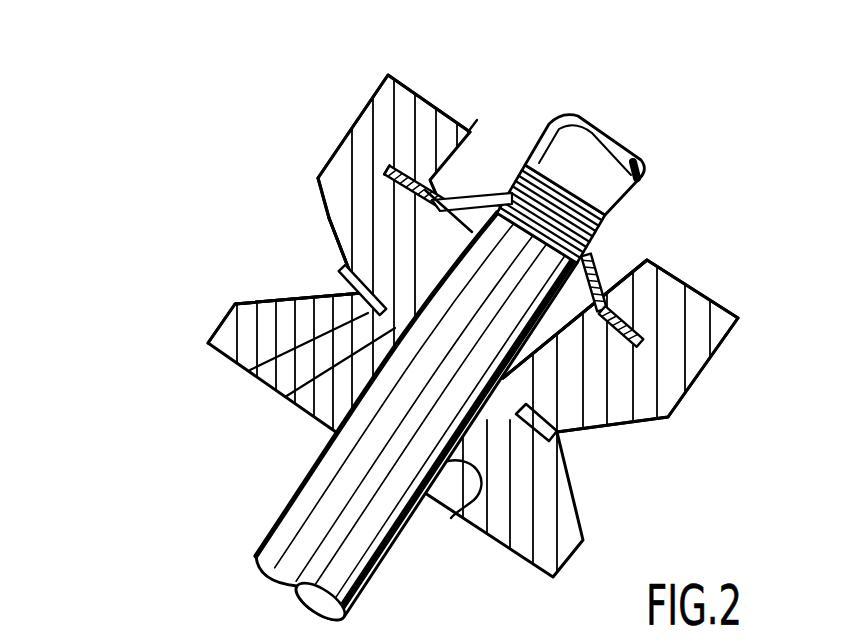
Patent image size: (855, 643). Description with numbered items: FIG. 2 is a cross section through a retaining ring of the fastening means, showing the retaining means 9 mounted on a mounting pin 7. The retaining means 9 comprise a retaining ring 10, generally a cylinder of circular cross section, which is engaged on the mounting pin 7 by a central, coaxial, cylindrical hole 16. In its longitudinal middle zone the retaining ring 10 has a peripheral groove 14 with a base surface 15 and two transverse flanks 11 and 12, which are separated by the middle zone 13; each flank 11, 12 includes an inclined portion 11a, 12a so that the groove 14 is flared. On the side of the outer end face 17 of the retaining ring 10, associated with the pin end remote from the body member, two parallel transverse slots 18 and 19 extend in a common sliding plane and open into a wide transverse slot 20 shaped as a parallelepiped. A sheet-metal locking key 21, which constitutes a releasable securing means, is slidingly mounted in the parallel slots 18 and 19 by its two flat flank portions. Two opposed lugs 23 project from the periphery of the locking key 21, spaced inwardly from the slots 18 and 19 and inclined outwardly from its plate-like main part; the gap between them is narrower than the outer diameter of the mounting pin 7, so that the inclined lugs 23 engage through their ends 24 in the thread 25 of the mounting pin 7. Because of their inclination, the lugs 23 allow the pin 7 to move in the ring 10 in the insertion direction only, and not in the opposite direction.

The mounting pin 7 is at (367, 463).
The retaining means 9 is at (440, 302).
The retaining ring 10 is at (347, 137).
The flank 11 is at (357, 297).
The inclined portion 11a is at (263, 300).
The flank 12 is at (345, 280).
The inclined portion 12a is at (329, 218).
The middle zone 13 is at (297, 250).
The peripheral groove 14 is at (250, 370).
The base surface 15 is at (284, 386).
The cylindrical hole 16 is at (463, 510).
The outer end face 17 is at (433, 97).
The transverse slot 18 is at (390, 170).
The transverse slot 19 is at (636, 322).
The wide transverse slot 20 is at (462, 162).
The locking key 21 is at (612, 274).
The lugs 23 is at (483, 192).
The ends 24 is at (602, 236).
The thread 25 is at (610, 143).